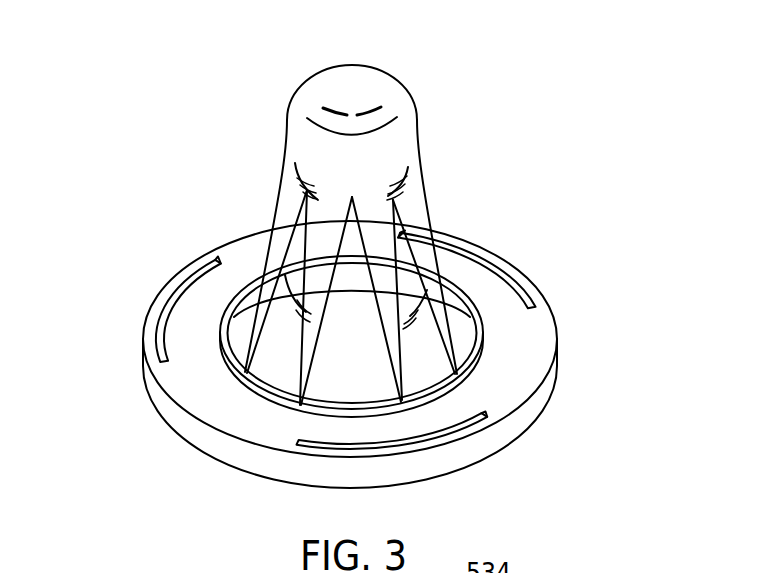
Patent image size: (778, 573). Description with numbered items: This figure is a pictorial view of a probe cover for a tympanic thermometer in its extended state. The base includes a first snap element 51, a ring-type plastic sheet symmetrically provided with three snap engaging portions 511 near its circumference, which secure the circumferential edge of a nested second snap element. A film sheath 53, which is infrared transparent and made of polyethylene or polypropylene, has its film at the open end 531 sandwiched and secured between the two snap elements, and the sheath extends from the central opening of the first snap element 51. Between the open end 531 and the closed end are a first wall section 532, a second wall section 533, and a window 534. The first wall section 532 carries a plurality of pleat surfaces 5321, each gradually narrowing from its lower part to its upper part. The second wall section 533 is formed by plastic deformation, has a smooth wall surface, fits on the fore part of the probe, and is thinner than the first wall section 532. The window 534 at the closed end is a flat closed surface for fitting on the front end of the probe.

The first snap element 51 is at (527, 363).
The snap engaging portions 511 is at (163, 340).
The open end 531 is at (437, 395).
The film sheath 53 is at (466, 208).
The second wall section 533 is at (412, 130).
The window 534 is at (373, 86).
The first wall section 532 is at (450, 272).
The pleat surfaces 5321 is at (427, 340).